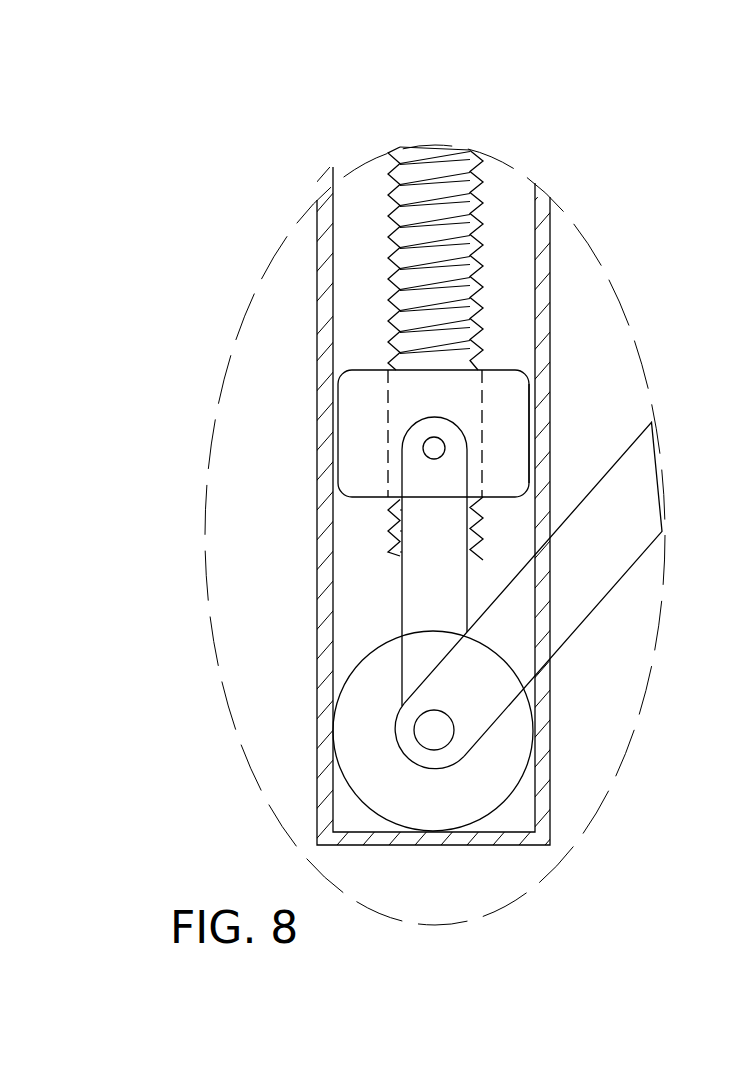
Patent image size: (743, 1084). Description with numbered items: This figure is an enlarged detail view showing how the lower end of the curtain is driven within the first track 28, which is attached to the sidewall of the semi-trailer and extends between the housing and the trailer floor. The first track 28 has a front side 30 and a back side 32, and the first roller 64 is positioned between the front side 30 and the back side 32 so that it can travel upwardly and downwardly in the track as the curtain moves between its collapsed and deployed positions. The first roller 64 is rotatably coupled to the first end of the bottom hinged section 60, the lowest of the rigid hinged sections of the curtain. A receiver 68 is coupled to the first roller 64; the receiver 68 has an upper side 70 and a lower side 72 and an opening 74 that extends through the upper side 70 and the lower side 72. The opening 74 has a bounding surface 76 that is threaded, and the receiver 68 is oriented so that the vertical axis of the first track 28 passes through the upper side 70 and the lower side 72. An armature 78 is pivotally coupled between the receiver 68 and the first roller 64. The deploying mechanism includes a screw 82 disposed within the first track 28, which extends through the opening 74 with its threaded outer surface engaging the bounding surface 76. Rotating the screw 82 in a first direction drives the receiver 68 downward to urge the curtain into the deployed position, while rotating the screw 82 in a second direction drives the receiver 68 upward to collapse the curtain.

The first track 28 is at (550, 250).
The front side 30 is at (550, 317).
The back side 32 is at (327, 407).
The bottom hinged section 60 is at (587, 592).
The first roller 64 is at (350, 677).
The receiver 68 is at (531, 437).
The upper side 70 is at (360, 372).
The lower side 72 is at (358, 500).
The opening 74 is at (440, 372).
The bounding surface 76 is at (390, 413).
The armature 78 is at (427, 648).
The screw 82 is at (388, 212).